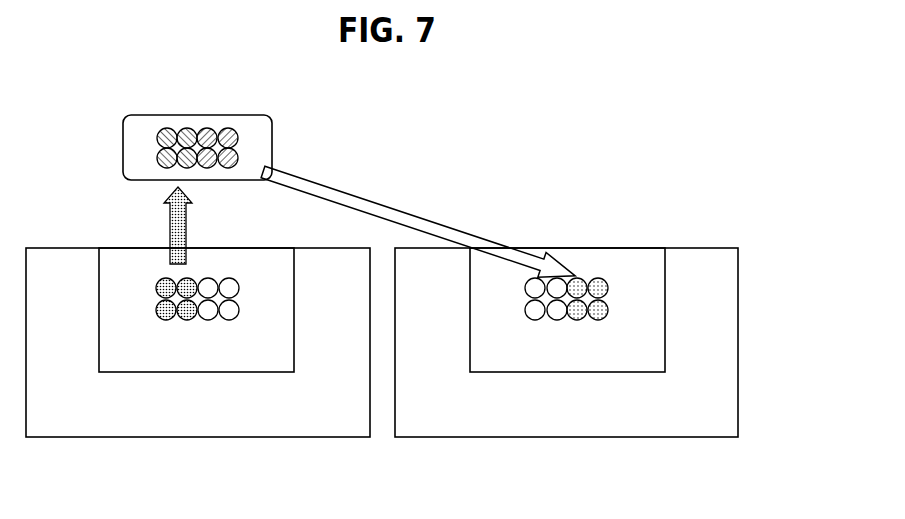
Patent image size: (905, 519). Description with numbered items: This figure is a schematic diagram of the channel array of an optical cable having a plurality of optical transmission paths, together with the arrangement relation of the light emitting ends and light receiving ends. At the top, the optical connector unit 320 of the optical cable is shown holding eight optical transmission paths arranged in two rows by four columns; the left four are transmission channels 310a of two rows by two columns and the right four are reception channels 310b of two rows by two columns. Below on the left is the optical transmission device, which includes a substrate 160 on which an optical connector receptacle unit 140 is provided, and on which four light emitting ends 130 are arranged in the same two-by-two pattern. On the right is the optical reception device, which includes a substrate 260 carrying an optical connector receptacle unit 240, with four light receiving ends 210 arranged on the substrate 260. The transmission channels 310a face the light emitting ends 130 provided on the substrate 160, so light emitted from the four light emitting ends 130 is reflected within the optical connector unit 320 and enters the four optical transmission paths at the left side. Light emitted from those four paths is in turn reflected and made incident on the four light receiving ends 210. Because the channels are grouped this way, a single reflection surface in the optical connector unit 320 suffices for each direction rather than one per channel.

The light emitting end 130 is at (155, 280).
The optical connector receptacle unit 140 is at (247, 358).
The substrate 160 is at (330, 420).
The light receiving end 210 is at (610, 280).
The optical connector receptacle unit 240 is at (615, 358).
The substrate 260 is at (700, 420).
The transmission channels 310a is at (178, 124).
The reception channels 310b is at (218, 124).
The optical connector unit 320 is at (272, 148).